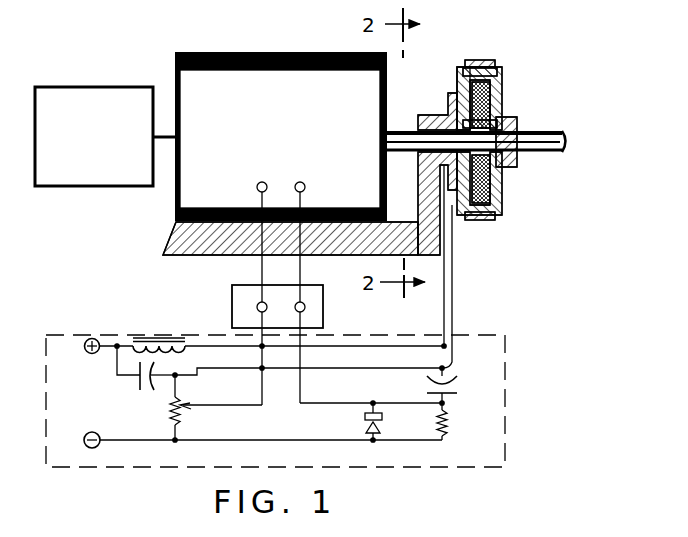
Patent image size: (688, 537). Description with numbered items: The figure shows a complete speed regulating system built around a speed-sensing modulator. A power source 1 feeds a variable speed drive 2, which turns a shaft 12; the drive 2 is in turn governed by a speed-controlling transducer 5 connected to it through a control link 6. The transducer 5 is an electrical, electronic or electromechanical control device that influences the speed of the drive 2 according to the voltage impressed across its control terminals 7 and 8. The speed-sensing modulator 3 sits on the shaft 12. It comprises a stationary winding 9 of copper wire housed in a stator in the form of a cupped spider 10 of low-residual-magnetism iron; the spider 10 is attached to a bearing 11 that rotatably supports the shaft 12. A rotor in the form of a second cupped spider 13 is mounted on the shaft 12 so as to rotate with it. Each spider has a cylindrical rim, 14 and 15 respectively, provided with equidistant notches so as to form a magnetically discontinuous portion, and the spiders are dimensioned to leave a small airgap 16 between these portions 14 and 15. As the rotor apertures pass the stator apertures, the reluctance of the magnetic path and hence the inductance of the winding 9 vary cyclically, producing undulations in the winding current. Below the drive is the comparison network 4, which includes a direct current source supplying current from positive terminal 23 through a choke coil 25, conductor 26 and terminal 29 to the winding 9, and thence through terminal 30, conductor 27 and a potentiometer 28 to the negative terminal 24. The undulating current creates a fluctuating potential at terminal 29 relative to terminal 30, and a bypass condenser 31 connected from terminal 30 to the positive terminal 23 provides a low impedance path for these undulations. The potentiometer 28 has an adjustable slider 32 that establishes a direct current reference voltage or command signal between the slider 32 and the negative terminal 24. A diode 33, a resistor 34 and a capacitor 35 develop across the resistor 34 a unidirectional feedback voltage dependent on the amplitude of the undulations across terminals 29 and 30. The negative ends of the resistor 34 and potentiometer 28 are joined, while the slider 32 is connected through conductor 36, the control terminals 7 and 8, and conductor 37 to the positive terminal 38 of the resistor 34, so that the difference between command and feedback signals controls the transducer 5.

The power source 1 is at (105, 136).
The variable speed drive 2 is at (290, 154).
The speed-sensing modulator 3 is at (470, 57).
The comparison network 4 is at (275, 401).
The speed-controlling transducer 5 is at (277, 306).
The control link 6 is at (298, 276).
The control terminal 7 is at (258, 310).
The control terminal 8 is at (304, 310).
The stationary winding 9 is at (492, 100).
The cupped spider 10 is at (458, 80).
The bearing 11 is at (440, 118).
The shaft 12 is at (552, 152).
The cupped spider 13 is at (503, 77).
The cylindrical rim 14 is at (463, 66).
The cylindrical rim 15 is at (490, 62).
The airgap 16 is at (462, 223).
The positive terminal 23 is at (98, 347).
The negative terminal 24 is at (86, 433).
The choke coil 25 is at (159, 336).
The conductor 26 is at (396, 348).
The conductor 27 is at (382, 372).
The potentiometer 28 is at (221, 393).
The terminal 29 is at (441, 345).
The terminal 30 is at (453, 366).
The bypass condenser 31 is at (146, 371).
The adjustable slider 32 is at (181, 410).
The diode 33 is at (382, 423).
The resistor 34 is at (454, 421).
The capacitor 35 is at (454, 392).
The conductor 36 is at (258, 403).
The conductor 37 is at (323, 402).
The positive terminal 38 is at (458, 405).